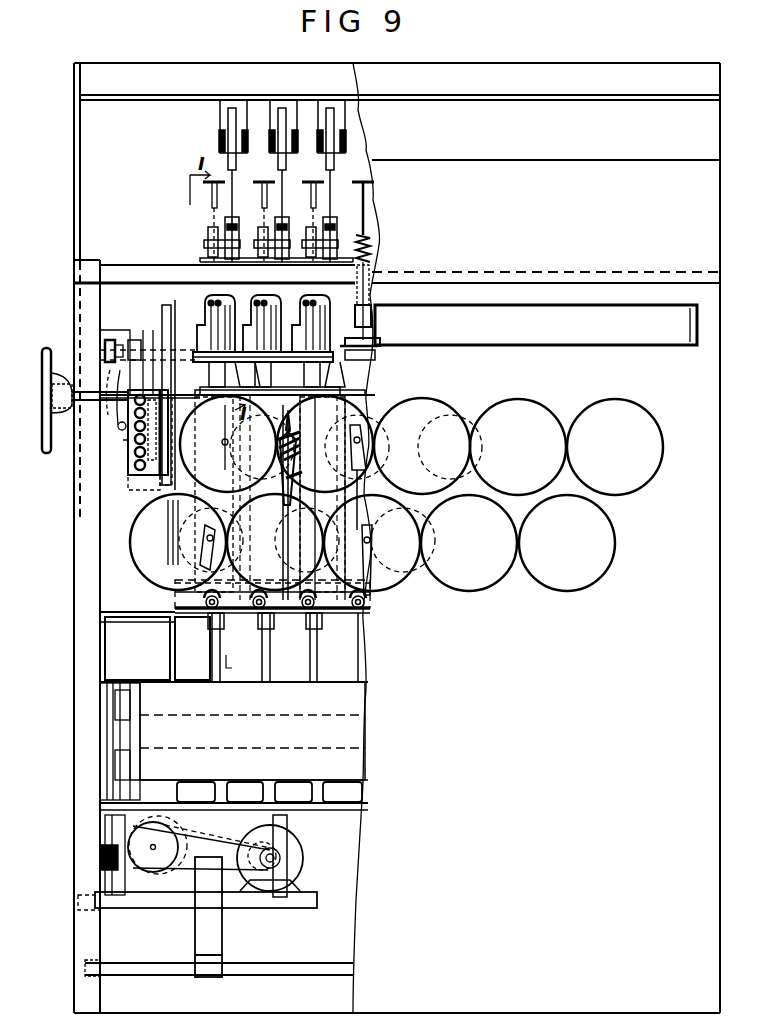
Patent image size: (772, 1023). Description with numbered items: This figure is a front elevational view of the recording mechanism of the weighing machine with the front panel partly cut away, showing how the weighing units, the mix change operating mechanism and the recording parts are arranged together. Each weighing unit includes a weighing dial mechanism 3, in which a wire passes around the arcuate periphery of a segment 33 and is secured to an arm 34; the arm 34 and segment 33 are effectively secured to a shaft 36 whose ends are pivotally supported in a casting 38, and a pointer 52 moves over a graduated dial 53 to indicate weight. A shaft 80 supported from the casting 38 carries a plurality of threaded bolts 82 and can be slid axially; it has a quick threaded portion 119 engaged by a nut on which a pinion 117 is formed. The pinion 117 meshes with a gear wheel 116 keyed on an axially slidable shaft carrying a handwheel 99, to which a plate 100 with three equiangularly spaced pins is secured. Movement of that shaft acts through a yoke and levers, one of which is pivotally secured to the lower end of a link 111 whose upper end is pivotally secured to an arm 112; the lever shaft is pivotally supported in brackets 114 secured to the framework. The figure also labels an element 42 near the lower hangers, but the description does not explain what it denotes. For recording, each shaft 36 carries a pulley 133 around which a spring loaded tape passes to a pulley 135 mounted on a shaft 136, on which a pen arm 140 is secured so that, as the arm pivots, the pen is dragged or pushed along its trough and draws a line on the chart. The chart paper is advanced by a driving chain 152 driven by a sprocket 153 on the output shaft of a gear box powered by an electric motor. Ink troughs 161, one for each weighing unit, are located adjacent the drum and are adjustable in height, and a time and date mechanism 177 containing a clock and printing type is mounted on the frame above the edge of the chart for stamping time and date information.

The weighing dial mechanism 3 is at (180, 510).
The segment 33 is at (288, 435).
The arm 34 is at (288, 455).
The shaft 36 is at (283, 415).
The casting 38 is at (288, 475).
The lever 42 is at (372, 532).
The pointer 52 is at (232, 410).
The dial 53 is at (185, 480).
The shaft 80 is at (368, 355).
The threaded bolt 82 is at (370, 366).
The handwheel 99 is at (72, 404).
The plate 100 is at (60, 375).
The link 111 is at (129, 397).
The arm 112 is at (105, 345).
The bracket 114 is at (120, 438).
The gear wheel 116 is at (153, 372).
The pinion 117 is at (165, 340).
The quick threaded portion 119 is at (188, 340).
The pulley 133 is at (280, 452).
The pulley 135 is at (192, 592).
The shaft 136 is at (180, 605).
The pen arm 140 is at (214, 651).
The driving chain 152 is at (105, 750).
The sprocket 153 is at (105, 858).
The ink trough 161 is at (238, 792).
The time and date mechanism 177 is at (150, 657).